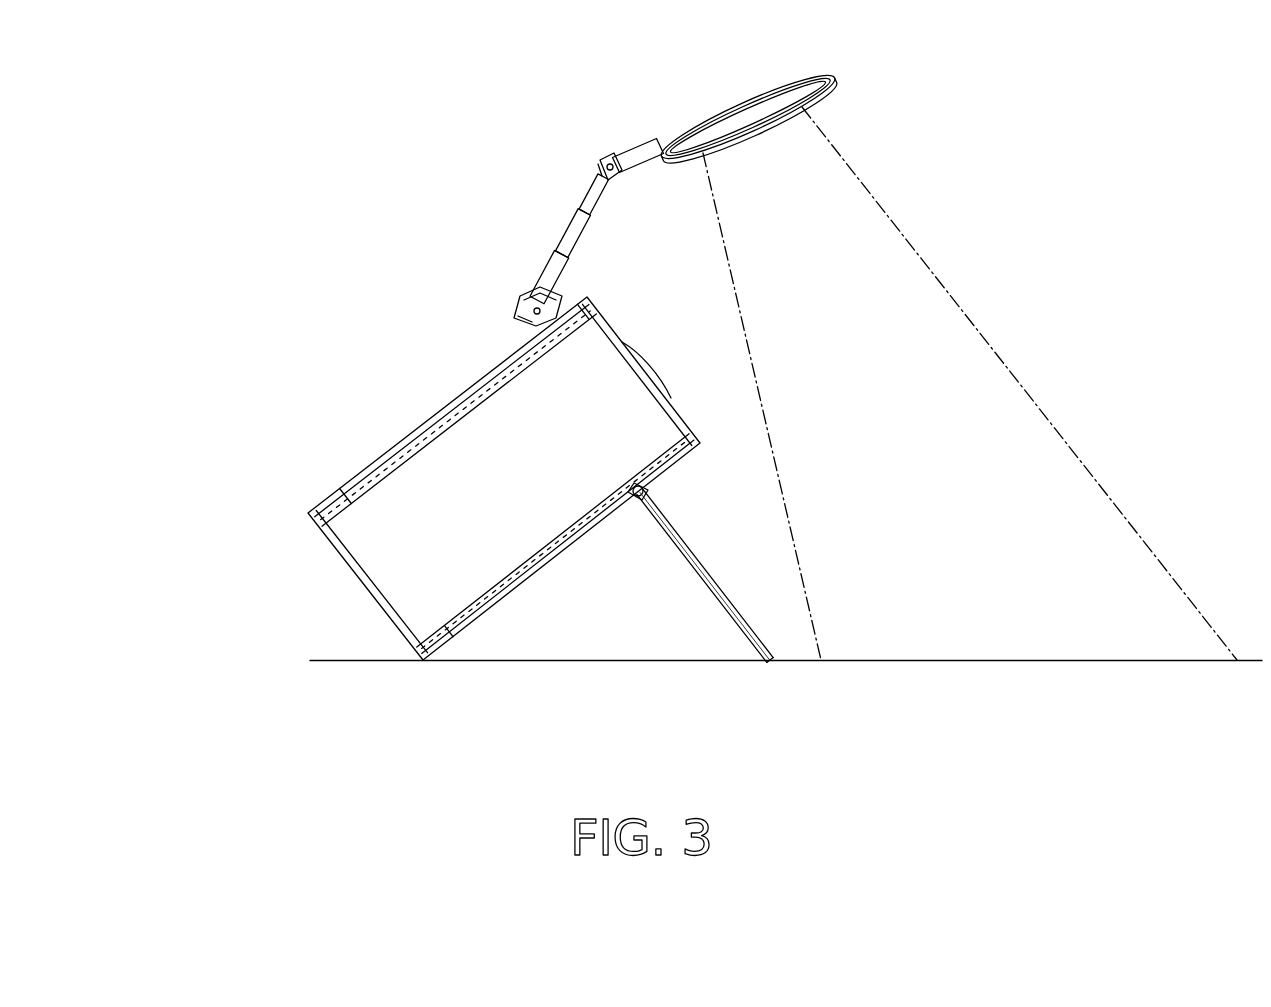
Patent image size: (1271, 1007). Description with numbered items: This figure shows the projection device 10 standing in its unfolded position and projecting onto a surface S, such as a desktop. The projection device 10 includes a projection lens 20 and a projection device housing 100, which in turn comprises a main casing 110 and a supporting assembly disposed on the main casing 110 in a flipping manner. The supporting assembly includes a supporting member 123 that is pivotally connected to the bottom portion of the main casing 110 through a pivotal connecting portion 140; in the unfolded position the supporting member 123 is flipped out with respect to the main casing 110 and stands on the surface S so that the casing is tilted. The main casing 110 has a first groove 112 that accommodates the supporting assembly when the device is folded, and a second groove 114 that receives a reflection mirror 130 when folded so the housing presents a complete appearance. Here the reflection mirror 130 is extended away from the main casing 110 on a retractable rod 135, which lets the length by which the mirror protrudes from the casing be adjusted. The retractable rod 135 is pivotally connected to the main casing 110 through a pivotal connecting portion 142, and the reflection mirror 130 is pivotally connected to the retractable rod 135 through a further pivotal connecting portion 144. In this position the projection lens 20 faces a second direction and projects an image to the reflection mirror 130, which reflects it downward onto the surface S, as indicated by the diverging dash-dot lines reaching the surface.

The projection device 10 is at (330, 186).
The projection lens 20 is at (652, 375).
The projection device housing 100 is at (207, 66).
The main casing 110 is at (489, 478).
The first groove 112 is at (540, 575).
The second groove 114 is at (435, 414).
The supporting member 123 is at (738, 622).
The reflection mirror 130 is at (717, 112).
The retractable rod 135 is at (578, 222).
The pivotal connecting portion 140 is at (642, 500).
The pivotal connecting portion 142 is at (522, 296).
The pivotal connecting portion 144 is at (612, 158).
The surface S is at (905, 652).